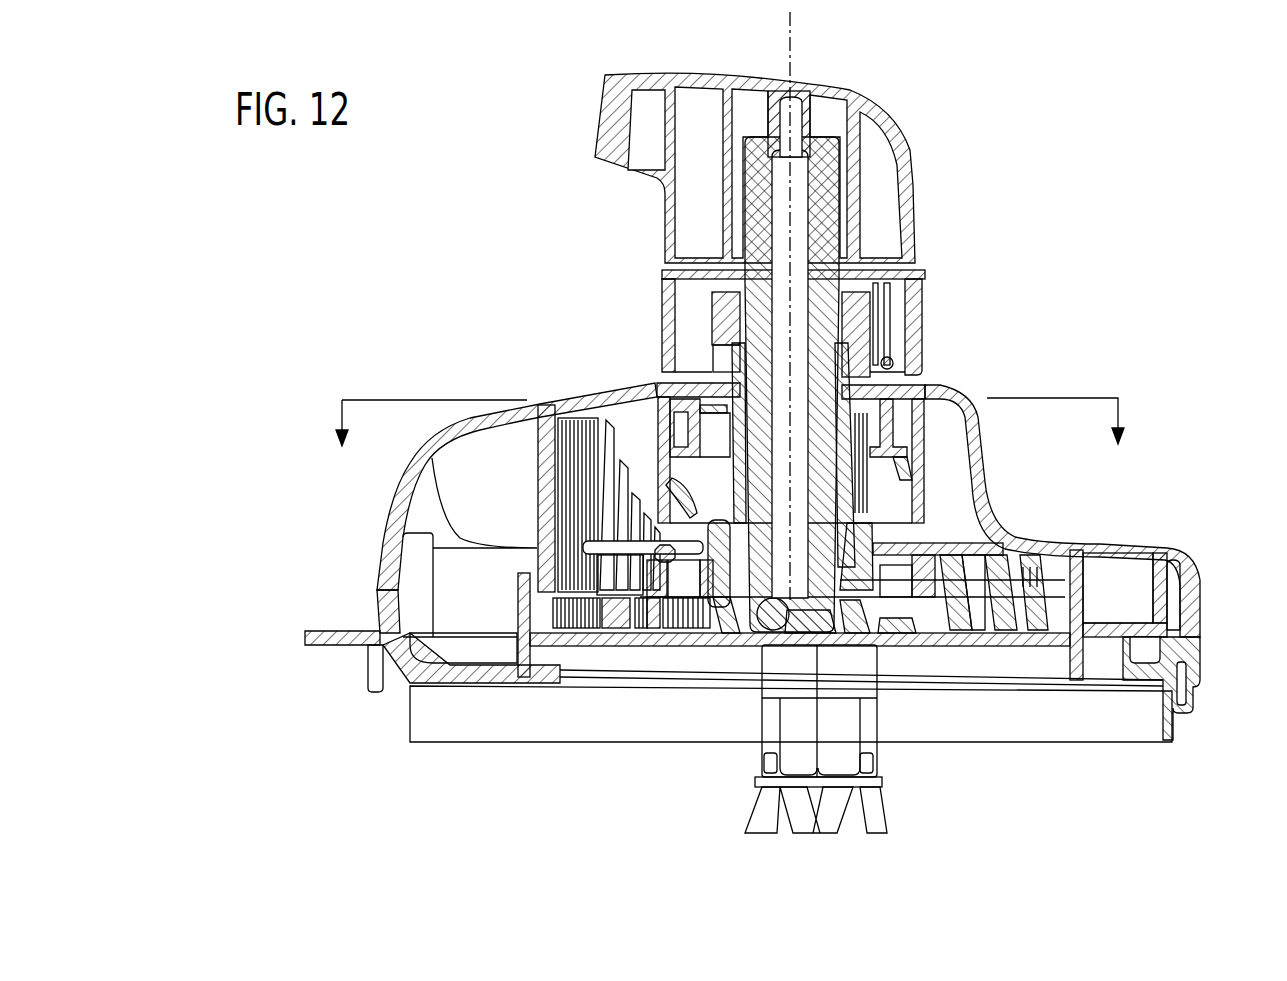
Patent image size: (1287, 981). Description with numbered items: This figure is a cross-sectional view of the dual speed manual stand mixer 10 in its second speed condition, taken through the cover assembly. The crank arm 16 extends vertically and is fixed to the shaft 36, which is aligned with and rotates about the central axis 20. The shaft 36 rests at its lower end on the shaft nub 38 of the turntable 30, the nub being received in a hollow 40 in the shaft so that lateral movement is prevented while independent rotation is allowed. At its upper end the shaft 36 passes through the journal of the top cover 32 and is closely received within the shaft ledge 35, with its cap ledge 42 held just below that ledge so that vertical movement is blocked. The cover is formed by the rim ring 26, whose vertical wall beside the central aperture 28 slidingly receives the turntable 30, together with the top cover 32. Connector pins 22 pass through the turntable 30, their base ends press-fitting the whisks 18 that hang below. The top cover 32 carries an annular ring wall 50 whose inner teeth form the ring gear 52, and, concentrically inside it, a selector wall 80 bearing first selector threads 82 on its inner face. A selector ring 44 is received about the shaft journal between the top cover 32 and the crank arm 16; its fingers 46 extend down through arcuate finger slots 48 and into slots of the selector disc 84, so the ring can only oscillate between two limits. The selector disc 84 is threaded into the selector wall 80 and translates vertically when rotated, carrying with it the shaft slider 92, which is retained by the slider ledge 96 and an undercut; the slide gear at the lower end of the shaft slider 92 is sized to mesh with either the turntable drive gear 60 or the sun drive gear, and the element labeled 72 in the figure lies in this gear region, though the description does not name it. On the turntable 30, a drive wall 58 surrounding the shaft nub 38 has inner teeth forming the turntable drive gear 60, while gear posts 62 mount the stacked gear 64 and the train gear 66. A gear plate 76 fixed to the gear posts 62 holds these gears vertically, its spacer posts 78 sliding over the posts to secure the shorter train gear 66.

The dual speed manual stand mixer 10 is at (729, 441).
The crank arm 16 is at (870, 120).
The whisks 18 is at (763, 817).
The central axis 20 is at (800, 43).
The connector pins 22 is at (758, 758).
The rim ring 26 is at (486, 674).
The central aperture 28 is at (566, 679).
The turntable 30 is at (523, 593).
The top cover 32 is at (400, 505).
The shaft ledge 35 is at (890, 276).
The shaft 36 is at (755, 214).
The shaft nub 38 is at (760, 630).
The hollow 40 is at (785, 487).
The cap ledge 42 is at (727, 302).
The selector ring 44 is at (925, 348).
The fingers 46 is at (893, 318).
The finger slots 48 is at (895, 366).
The ring wall 50 is at (540, 500).
The ring gear 52 is at (582, 455).
The drive wall 58 is at (870, 628).
The turntable drive gear 60 is at (838, 634).
The gear posts 62 is at (978, 640).
The stacked gear 64 is at (1025, 620).
The train gear 66 is at (553, 617).
The block 72 is at (922, 570).
The gear plate 76 is at (980, 547).
The spacer posts 78 is at (617, 573).
The selector wall 80 is at (922, 500).
The first selector threads 82 is at (673, 493).
The selector disc 84 is at (885, 433).
The shaft slider 92 is at (737, 370).
The slider ledge 96 is at (720, 412).